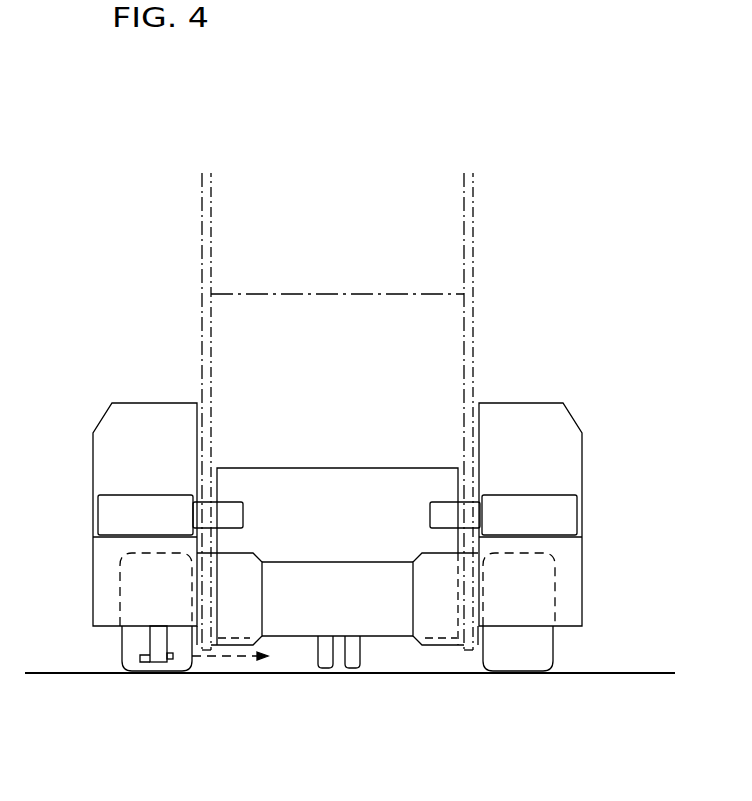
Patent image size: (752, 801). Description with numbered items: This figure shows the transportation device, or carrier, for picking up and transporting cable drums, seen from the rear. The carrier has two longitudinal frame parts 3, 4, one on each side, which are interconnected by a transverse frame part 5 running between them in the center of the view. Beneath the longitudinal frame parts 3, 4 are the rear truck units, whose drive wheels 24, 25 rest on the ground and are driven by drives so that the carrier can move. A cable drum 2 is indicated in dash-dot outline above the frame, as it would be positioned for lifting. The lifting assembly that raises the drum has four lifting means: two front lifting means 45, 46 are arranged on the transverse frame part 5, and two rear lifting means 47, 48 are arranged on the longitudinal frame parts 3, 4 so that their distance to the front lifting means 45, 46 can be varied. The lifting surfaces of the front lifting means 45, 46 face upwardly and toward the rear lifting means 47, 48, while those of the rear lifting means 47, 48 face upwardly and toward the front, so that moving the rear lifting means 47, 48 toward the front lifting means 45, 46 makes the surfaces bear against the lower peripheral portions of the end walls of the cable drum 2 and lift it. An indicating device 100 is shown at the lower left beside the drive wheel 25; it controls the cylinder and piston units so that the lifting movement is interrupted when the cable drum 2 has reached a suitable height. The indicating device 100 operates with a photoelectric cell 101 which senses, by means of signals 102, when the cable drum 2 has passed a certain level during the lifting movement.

The cable drum 2 is at (464, 288).
The longitudinal frame part 3 is at (563, 563).
The longitudinal frame part 4 is at (108, 572).
The transverse frame part 5 is at (298, 617).
The drive wheel 24 is at (518, 652).
The drive wheel 25 is at (133, 646).
The front lifting means 45 is at (423, 537).
The front lifting means 46 is at (248, 540).
The rear lifting means 47 is at (444, 484).
The rear lifting means 48 is at (227, 481).
The indicating device 100 is at (141, 657).
The photoelectric cell 101 is at (172, 660).
The signals 102 is at (230, 663).